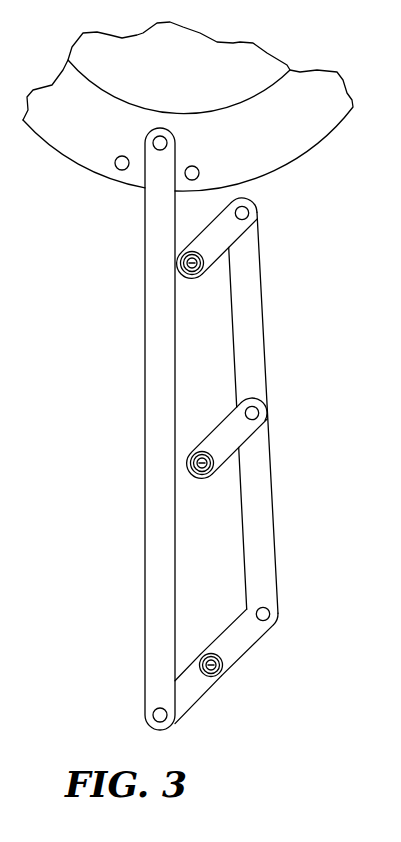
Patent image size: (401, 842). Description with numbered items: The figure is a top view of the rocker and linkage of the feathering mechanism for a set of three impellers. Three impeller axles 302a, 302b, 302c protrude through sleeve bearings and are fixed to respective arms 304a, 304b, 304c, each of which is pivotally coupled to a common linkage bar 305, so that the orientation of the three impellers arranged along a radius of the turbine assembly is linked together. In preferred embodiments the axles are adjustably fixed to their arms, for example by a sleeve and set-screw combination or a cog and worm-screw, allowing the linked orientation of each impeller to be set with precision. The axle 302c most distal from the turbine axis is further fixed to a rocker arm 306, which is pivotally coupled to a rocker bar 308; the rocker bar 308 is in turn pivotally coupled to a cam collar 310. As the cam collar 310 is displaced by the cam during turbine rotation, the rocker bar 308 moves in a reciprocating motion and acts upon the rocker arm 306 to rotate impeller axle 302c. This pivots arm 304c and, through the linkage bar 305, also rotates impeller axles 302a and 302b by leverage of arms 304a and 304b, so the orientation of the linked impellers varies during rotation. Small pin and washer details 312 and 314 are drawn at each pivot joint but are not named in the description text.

The impeller axle 302a is at (181, 263).
The impeller axle 302b is at (192, 472).
The impeller axle 302c is at (217, 678).
The arm 304a is at (227, 233).
The arm 304b is at (235, 430).
The arm 304c is at (238, 642).
The linkage bar 305 is at (260, 508).
The rocker arm 306 is at (192, 690).
The rocker bar 308 is at (157, 332).
The cam collar 310 is at (263, 145).
The pin 312 is at (185, 276).
The bushing 314 is at (200, 277).